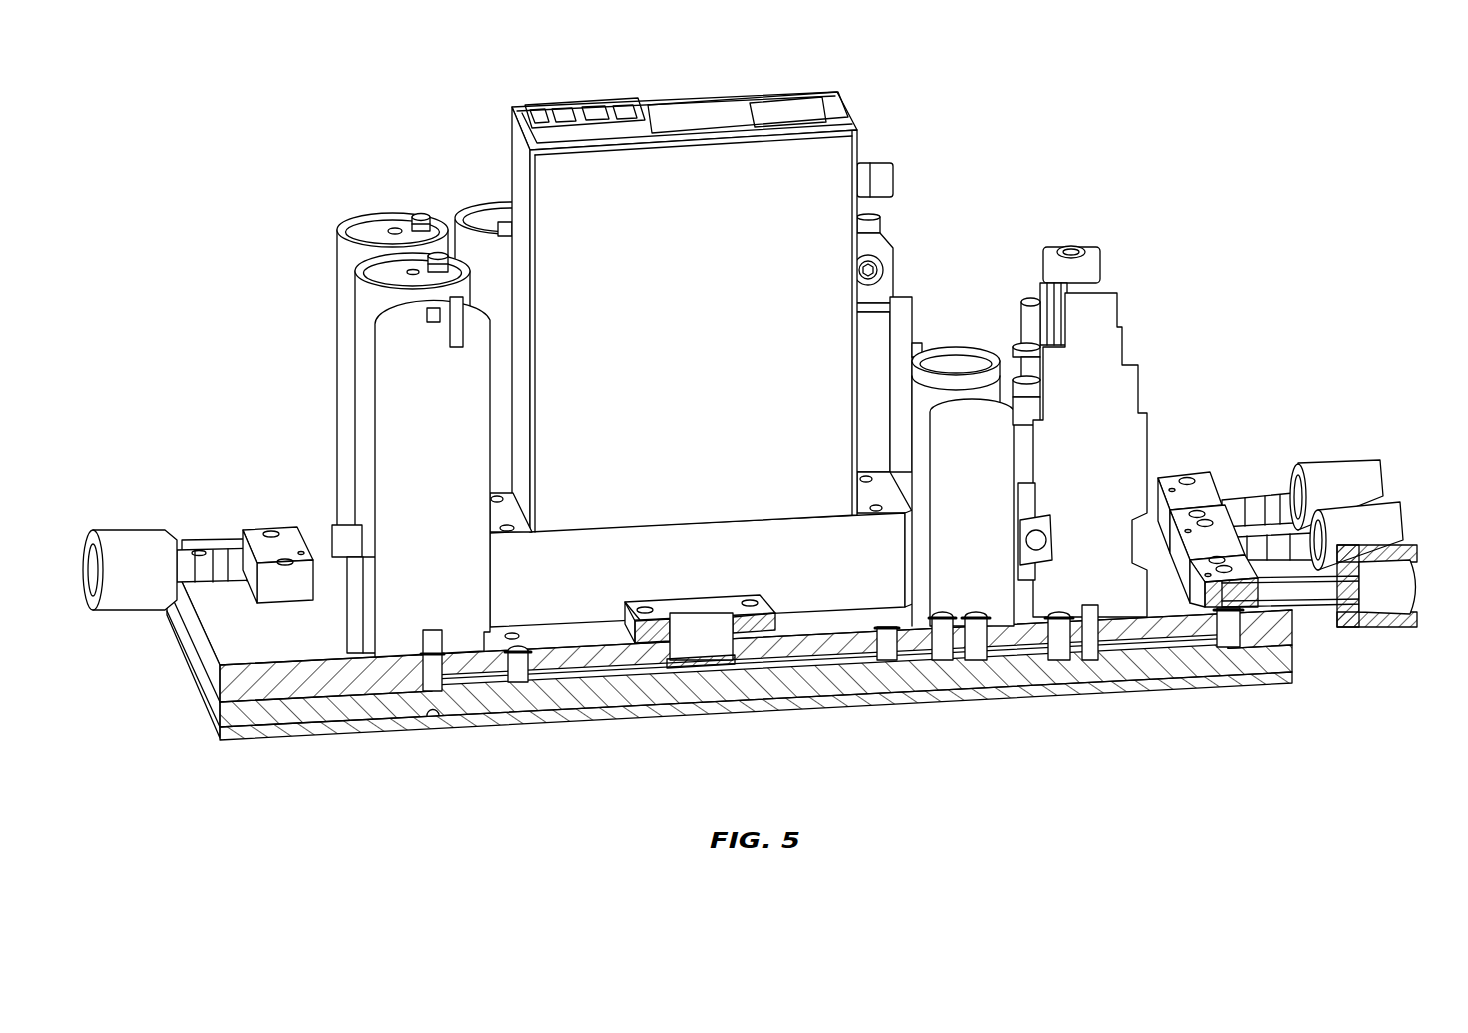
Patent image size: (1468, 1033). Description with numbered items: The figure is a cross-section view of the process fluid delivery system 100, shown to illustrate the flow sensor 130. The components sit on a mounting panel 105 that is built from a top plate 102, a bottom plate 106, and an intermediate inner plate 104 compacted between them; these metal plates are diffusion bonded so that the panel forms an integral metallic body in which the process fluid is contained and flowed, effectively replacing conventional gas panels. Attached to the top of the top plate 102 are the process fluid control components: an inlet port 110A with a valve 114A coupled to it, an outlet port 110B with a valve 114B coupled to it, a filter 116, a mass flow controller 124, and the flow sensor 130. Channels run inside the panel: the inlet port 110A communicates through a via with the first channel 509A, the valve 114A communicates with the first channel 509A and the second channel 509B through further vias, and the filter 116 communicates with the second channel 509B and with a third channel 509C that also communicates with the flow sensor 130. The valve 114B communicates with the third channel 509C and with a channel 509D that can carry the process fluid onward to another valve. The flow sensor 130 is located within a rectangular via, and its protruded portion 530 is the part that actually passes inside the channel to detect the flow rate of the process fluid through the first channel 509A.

The process fluid delivery system 100 is at (170, 102).
The top plate 102 is at (1292, 628).
The inner plate 104 is at (1292, 656).
The mounting panel 105 is at (725, 617).
The bottom plate 106 is at (1292, 678).
The inlet port 110A is at (1388, 627).
The outlet port 110B is at (148, 531).
The valve 114A is at (1118, 306).
The valve 114B is at (375, 362).
The filter 116 is at (962, 343).
The mass flow controller 124 is at (787, 90).
The flow sensor 130 is at (680, 648).
The first channel 509A is at (1168, 660).
The second channel 509B is at (1008, 657).
The third channel 509C is at (545, 688).
The channel 509D is at (433, 716).
The protruded portion 530 is at (715, 673).